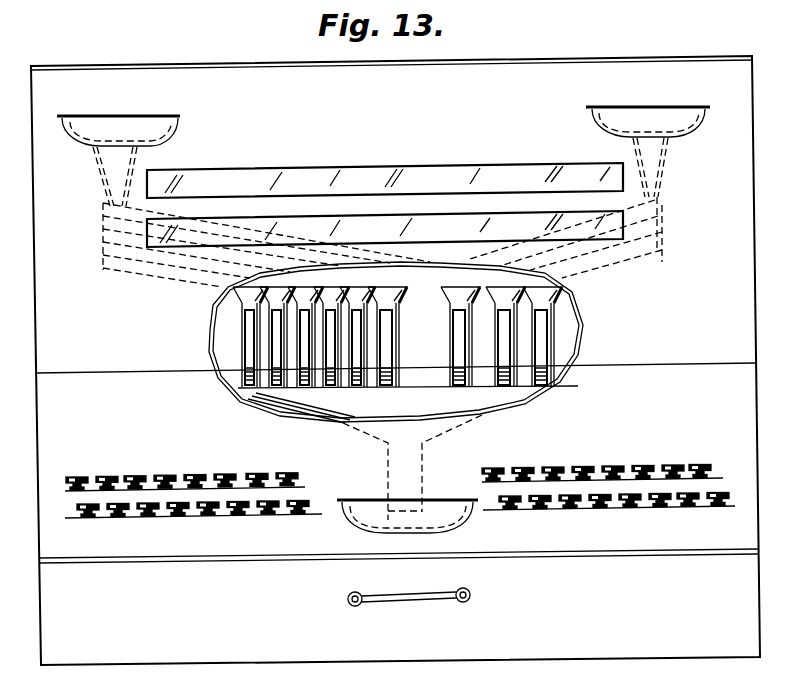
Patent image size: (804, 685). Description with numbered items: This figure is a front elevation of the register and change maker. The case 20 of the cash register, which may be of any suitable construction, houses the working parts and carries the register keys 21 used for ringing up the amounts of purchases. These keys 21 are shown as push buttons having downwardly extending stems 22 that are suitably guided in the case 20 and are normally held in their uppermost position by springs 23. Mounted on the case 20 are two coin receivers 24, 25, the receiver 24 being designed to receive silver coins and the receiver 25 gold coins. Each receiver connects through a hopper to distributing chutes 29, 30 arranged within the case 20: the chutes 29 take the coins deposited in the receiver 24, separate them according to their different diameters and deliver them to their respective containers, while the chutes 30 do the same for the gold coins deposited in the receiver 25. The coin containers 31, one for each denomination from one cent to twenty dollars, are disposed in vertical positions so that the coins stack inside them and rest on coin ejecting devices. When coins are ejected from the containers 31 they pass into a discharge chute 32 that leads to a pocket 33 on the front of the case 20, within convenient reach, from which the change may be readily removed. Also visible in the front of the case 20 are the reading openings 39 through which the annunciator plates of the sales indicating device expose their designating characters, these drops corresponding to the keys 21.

The case 20 is at (166, 65).
The register keys 21 is at (198, 475).
The stems 22 is at (120, 516).
The springs 23 is at (685, 510).
The coin receiver 24 is at (172, 116).
The coin receiver 25 is at (605, 108).
The distributing chutes 29 is at (198, 284).
The distributing chutes 30 is at (608, 272).
The coin containers 31 is at (277, 347).
The discharge chute 32 is at (503, 404).
The pocket 33 is at (462, 514).
The reading opening 39 is at (332, 170).